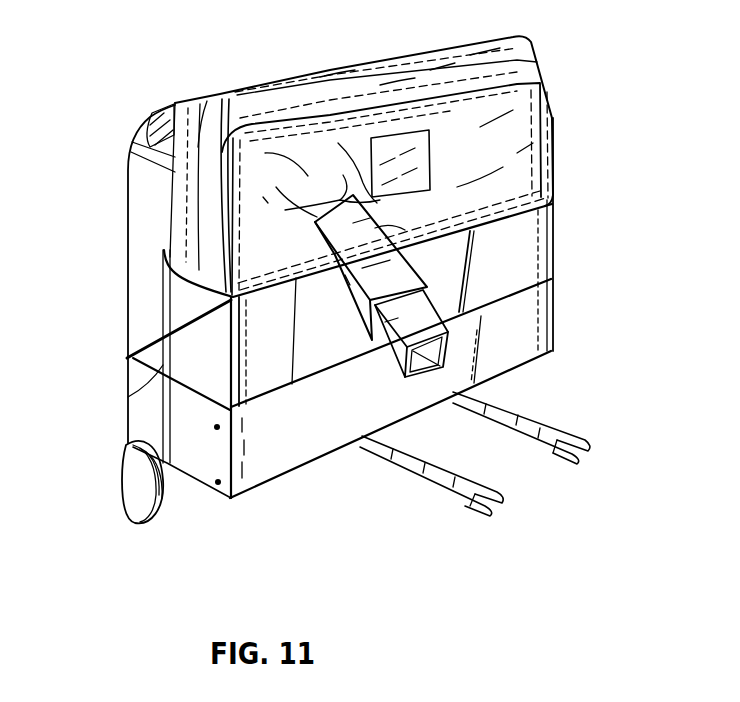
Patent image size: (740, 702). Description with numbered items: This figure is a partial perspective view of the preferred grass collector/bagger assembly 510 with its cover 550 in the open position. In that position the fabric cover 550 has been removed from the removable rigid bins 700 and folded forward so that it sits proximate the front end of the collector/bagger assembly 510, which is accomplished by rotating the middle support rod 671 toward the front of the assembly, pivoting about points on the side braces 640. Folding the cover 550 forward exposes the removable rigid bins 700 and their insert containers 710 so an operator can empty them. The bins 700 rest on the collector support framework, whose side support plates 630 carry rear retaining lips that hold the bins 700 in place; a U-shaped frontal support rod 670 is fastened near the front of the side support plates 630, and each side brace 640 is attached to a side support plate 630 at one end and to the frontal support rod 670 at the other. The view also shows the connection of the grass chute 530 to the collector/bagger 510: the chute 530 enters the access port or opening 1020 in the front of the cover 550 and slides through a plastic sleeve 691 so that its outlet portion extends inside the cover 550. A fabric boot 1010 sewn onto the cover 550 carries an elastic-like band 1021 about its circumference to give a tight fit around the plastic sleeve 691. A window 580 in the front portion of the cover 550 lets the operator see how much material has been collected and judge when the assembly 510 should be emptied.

The collector/bagger assembly 510 is at (560, 110).
The cover 550 is at (406, 80).
The window 580 is at (422, 163).
The fabric boot 1010 is at (320, 167).
The access port or opening 1020 is at (315, 213).
The elastic-like band 1021 is at (380, 216).
The plastic sleeve 691 is at (348, 297).
The grass chute 530 is at (398, 353).
The removable rigid bin 700 is at (150, 227).
The insert container 710 is at (150, 117).
The middle support rod 671 is at (163, 315).
The side brace 640 is at (128, 397).
The frontal support rod 670 is at (245, 352).
The side support plate 630 is at (287, 473).